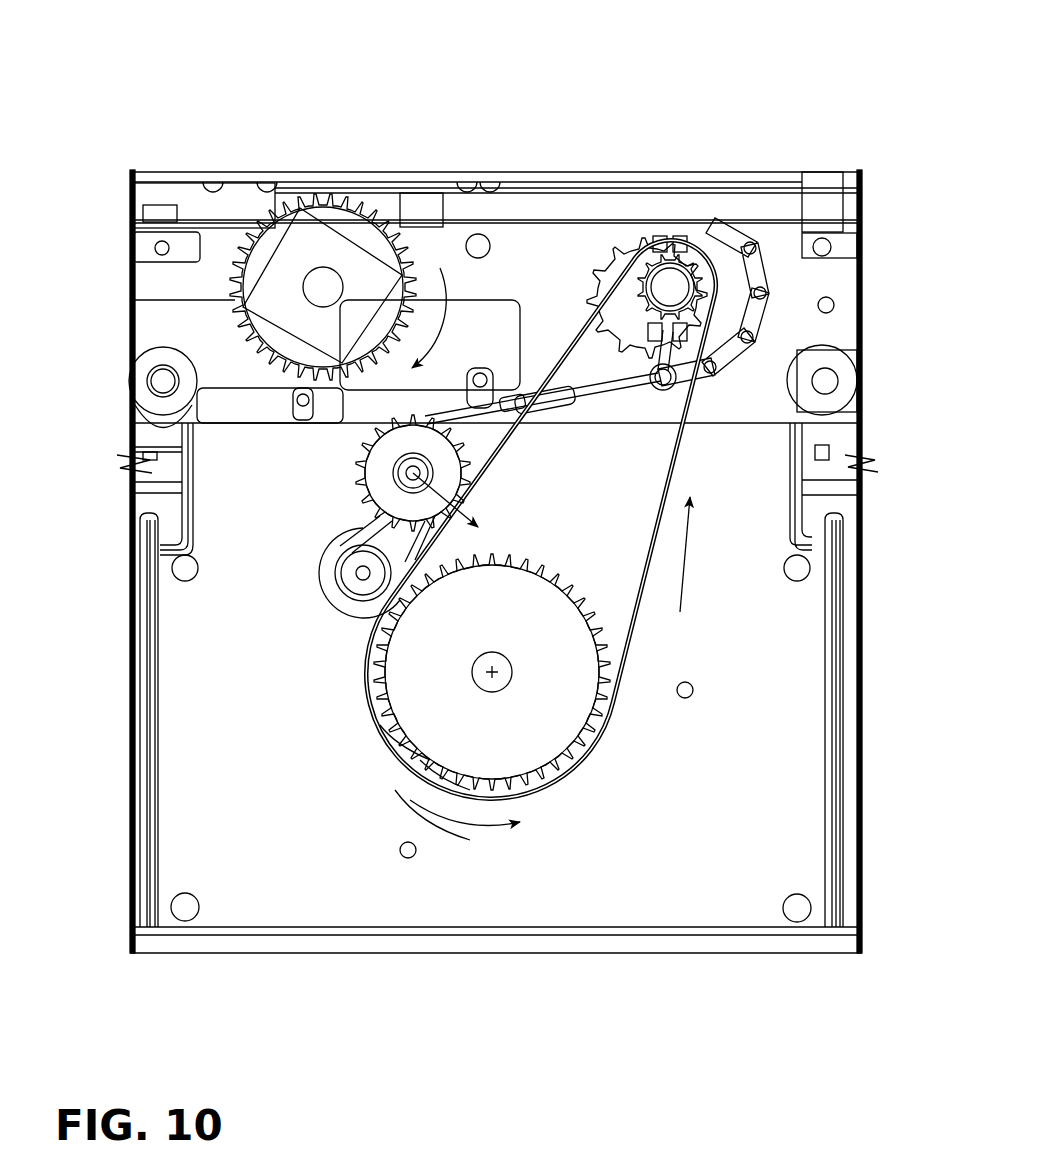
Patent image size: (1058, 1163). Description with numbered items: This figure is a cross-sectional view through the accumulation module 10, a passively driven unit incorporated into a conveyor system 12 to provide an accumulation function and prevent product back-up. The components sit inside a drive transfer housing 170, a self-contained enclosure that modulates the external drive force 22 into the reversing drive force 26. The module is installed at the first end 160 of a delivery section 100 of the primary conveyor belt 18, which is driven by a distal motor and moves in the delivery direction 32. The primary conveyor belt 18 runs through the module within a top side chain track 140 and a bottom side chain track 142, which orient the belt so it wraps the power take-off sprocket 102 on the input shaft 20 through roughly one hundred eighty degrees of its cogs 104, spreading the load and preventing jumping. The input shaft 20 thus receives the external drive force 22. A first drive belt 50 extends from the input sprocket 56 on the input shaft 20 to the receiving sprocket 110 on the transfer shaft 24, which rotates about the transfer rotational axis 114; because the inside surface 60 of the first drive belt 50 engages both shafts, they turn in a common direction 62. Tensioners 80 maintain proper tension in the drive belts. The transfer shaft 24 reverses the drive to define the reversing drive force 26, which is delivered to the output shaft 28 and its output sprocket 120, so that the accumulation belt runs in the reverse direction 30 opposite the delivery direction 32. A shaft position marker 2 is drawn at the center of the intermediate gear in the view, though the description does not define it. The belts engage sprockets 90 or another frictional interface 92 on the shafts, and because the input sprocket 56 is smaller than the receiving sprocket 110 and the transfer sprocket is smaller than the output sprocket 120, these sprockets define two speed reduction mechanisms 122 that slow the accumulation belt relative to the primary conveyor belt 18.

The accumulation module 10 is at (534, 110).
The conveyor system 12 is at (720, 125).
The delivery section 100 is at (425, 97).
The first end 160 is at (777, 133).
The top side chain track 140 is at (150, 180).
The output sprocket 120 is at (222, 265).
The reverse direction 30 is at (262, 153).
The delivery direction 32 is at (575, 153).
The output shaft 28 is at (330, 284).
The reversing drive force 26 is at (452, 332).
The input sprocket 56 is at (692, 258).
The input shaft 20 is at (690, 290).
The power take-off sprocket 102 is at (752, 236).
The primary conveyor belt 18 is at (757, 262).
The bottom side chain track 142 is at (601, 398).
The inside surface 60 is at (665, 485).
The common direction 62 is at (716, 440).
The speed reduction mechanisms 122 is at (716, 547).
The sprockets 90 is at (345, 490).
The tensioners 80 is at (330, 535).
The drive transfer housing 170 is at (120, 665).
The frictional interface 92 is at (322, 708).
The second gear 2 is at (403, 473).
The transfer shaft 24 is at (506, 677).
The transfer rotational axis 114 is at (496, 664).
The first drive belt 50 is at (642, 636).
The external drive force 22 is at (500, 857).
The cogs 104 is at (405, 726).
The receiving sprocket 110 is at (430, 766).